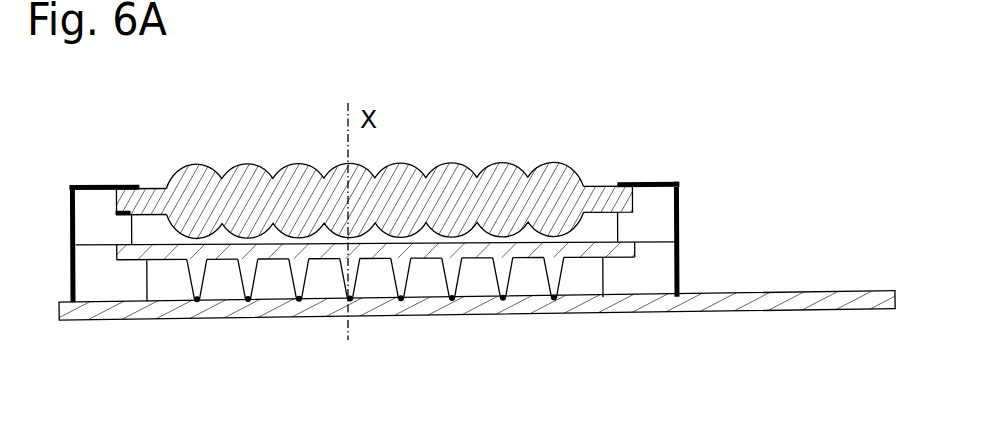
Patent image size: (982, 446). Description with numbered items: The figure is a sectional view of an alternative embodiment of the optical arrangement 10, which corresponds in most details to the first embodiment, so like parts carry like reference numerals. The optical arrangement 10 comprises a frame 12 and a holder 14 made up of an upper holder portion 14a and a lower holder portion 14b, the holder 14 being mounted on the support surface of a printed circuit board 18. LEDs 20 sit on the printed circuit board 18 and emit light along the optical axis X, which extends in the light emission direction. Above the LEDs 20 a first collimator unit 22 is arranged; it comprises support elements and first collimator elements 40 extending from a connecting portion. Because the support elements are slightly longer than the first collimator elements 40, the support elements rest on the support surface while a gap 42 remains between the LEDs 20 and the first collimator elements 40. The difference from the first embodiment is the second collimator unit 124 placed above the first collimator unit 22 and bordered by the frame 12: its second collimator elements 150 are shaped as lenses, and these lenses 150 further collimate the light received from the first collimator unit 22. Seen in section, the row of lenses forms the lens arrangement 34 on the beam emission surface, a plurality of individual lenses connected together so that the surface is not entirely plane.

The optical arrangement 10 is at (753, 142).
The frame 12 is at (625, 182).
The holder 14 is at (757, 168).
The upper holder portion 14a is at (660, 214).
The lower holder portion 14b is at (660, 255).
The printed circuit board 18 is at (732, 308).
The LEDs 20 is at (300, 302).
The first collimator unit 22 is at (480, 243).
The lens arrangement 34 is at (165, 130).
The first collimator elements 40 is at (403, 282).
The gap 42 is at (512, 296).
The second collimator unit 124 is at (583, 183).
The second collimator elements 150 is at (460, 213).